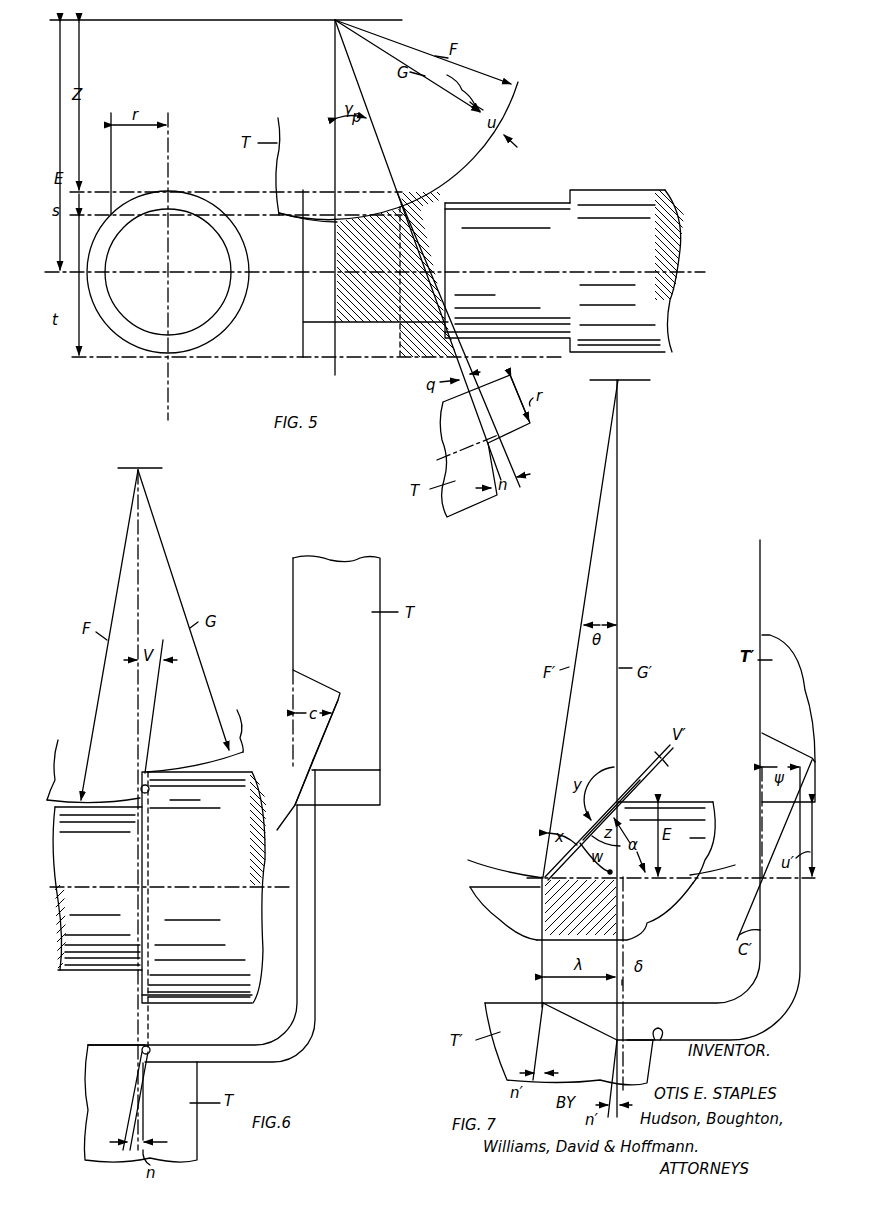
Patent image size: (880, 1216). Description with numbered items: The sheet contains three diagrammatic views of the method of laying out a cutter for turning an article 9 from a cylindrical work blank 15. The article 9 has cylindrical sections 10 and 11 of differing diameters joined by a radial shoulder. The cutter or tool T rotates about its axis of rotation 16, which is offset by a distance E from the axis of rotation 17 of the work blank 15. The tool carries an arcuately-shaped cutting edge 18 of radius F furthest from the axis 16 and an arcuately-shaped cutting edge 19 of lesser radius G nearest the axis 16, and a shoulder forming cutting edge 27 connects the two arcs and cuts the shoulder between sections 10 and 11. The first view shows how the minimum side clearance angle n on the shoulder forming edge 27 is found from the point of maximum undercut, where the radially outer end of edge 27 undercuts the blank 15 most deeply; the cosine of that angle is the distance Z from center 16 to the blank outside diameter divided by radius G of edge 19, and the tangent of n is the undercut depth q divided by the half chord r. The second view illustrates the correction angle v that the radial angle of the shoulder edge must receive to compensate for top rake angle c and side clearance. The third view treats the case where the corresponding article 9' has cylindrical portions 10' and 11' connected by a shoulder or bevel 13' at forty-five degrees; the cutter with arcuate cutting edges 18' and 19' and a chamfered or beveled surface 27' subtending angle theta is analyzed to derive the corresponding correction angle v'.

In FIG. 5, the article 9 is at (359, 273).
In FIG. 6, the article 9 is at (214, 911).
In FIG. 6, the cylindrical section 10 is at (97, 906).
In FIG. 6, the cylindrical section 11 is at (197, 1013).
In FIG. 5, the cylindrical work blank 15 is at (468, 197).
In FIG. 5, the axis of rotation of the tool 16 is at (332, 22).
In FIG. 6, the axis of rotation of the tool 16 is at (137, 469).
In FIG. 7, the axis of rotation of the tool 16 is at (622, 383).
In FIG. 5, the axis of rotation of the work blank 17 is at (530, 268).
In FIG. 6, the axis of rotation of the work blank 17 is at (338, 884).
In FIG. 5, the arcuately-shaped cutting edge 18 is at (302, 237).
In FIG. 5, the arcuately-shaped cutting edge 19 is at (459, 141).
In FIG. 5, the shoulder forming cutting edge 27 is at (427, 253).
In FIG. 7, the article 9' is at (578, 942).
In FIG. 7, the cylindrical portion 10' is at (491, 900).
In FIG. 7, the cylindrical portion 11' is at (669, 829).
In FIG. 7, the shoulder or bevel 13' is at (571, 810).
In FIG. 7, the arcuately-shaped cutting edge 18' is at (514, 990).
In FIG. 7, the arcuately-shaped cutting edge 19' is at (672, 1050).
In FIG. 7, the chamfered or beveled surface of the cutter 27' is at (580, 1031).